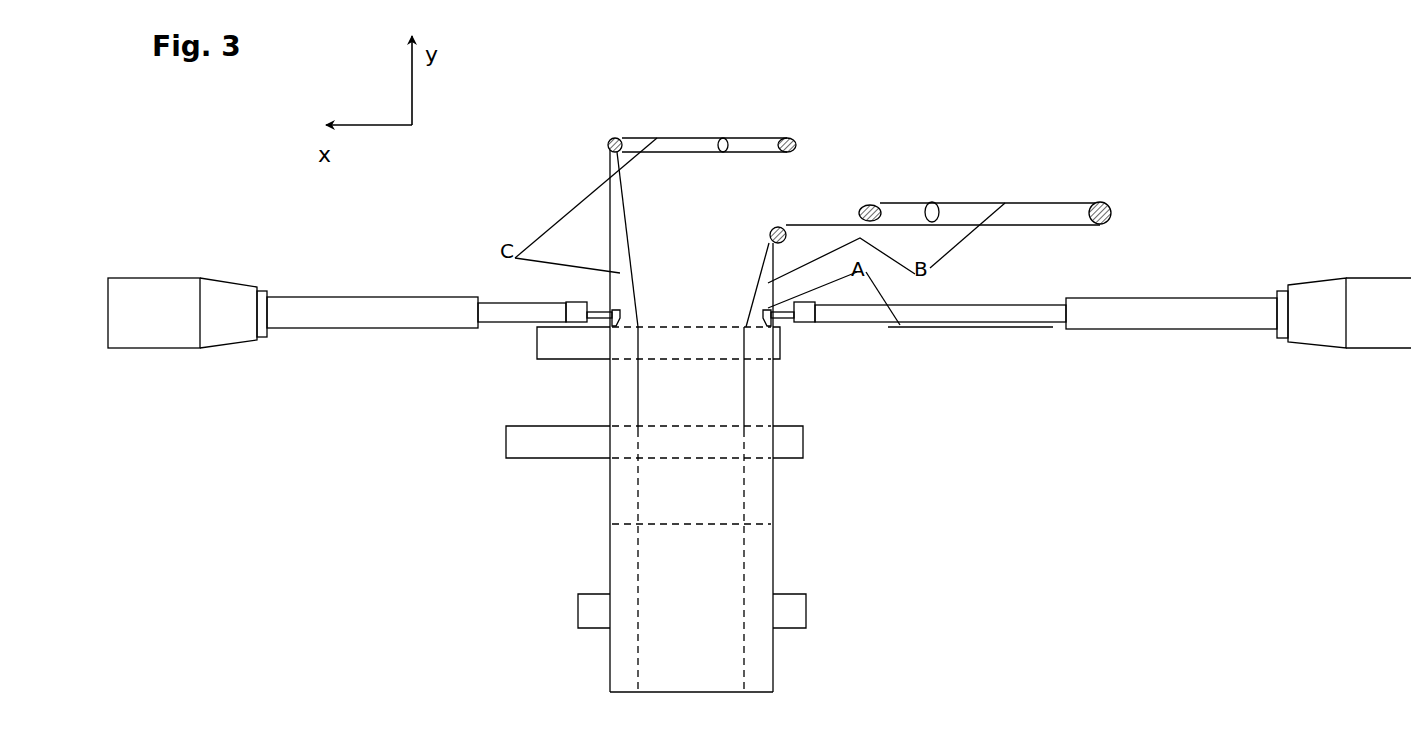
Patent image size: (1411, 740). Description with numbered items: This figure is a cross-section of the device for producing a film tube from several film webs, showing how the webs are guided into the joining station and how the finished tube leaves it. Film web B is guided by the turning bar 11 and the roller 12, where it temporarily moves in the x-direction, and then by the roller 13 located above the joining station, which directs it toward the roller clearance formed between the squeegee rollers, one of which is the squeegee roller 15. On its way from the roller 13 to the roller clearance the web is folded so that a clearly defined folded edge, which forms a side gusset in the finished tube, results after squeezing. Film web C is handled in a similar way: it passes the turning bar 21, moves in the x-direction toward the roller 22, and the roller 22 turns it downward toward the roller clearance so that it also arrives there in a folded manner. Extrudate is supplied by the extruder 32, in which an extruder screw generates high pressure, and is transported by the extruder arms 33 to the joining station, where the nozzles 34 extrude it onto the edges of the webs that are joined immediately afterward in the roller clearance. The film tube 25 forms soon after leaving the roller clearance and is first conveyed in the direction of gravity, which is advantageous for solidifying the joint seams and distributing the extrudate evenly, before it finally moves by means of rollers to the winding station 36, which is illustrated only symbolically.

The turning bar 11 is at (903, 212).
The roller 12 is at (1097, 204).
The roller 13 is at (783, 147).
The squeegee roller 15 is at (556, 345).
The turning bar 21 is at (740, 142).
The roller 22 is at (613, 140).
The film tube 25 is at (700, 392).
The extruder 32 is at (200, 281).
The extruder arm 33 is at (405, 308).
The nozzle 34 is at (535, 447).
The winding station 36 is at (622, 582).